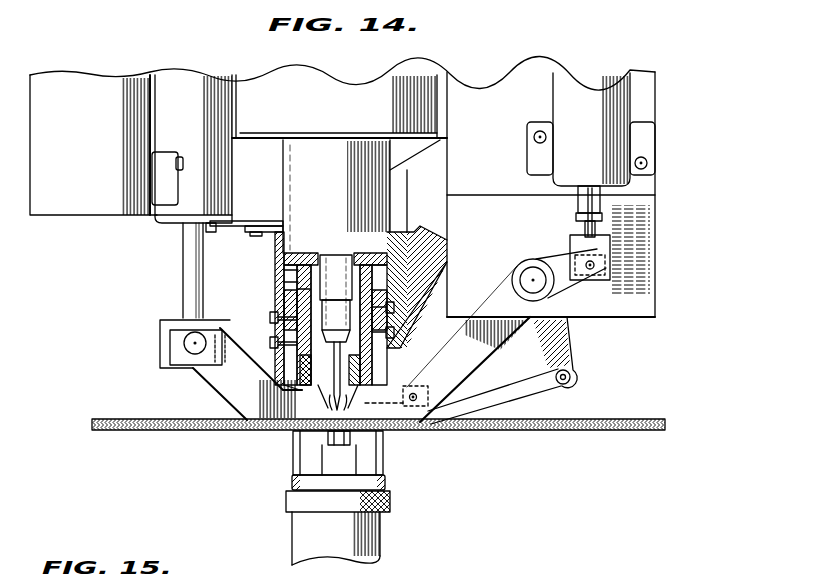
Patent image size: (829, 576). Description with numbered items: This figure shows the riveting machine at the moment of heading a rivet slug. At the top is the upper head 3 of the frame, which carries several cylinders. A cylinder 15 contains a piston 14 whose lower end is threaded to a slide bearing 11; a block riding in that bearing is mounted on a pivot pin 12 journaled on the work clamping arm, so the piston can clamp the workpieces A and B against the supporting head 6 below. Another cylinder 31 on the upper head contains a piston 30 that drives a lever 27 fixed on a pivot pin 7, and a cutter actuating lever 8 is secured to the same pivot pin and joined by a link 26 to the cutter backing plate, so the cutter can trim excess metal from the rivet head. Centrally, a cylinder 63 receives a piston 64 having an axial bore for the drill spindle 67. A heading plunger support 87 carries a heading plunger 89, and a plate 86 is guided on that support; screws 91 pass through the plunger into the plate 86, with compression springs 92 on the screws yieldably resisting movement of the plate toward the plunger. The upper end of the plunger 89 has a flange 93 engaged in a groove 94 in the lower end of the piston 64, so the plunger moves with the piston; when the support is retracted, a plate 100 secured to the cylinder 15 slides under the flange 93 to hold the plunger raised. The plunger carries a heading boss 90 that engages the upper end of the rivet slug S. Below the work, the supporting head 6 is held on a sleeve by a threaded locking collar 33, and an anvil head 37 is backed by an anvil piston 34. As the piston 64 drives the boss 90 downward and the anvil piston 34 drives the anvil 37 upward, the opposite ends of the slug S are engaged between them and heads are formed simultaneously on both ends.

The upper head 3 is at (657, 107).
The cylinder 15 is at (193, 117).
The cylinder 63 is at (336, 118).
The cylinder 31 is at (587, 120).
The piston 30 is at (580, 205).
The pivot pin 7 is at (532, 278).
The lever 27 is at (568, 262).
The cutter actuating lever 8 is at (571, 352).
The link 26 is at (535, 393).
The piston 14 is at (190, 240).
The plate 100 is at (246, 219).
The piston 64 is at (340, 200).
The heading plunger support 87 is at (277, 232).
The plate 86 is at (386, 375).
The drill spindle 67 is at (336, 254).
The groove 94 is at (292, 268).
The flange 93 is at (293, 280).
The heading plunger 89 is at (297, 289).
The screws 91 is at (276, 320).
The compression springs 92 is at (300, 365).
The slide bearing 11 is at (165, 322).
The pivot pin 12 is at (190, 343).
The workpiece A is at (97, 419).
The workpiece B is at (97, 431).
The supporting head 6 is at (294, 470).
The heading boss 90 is at (300, 436).
The rivet slug S is at (338, 462).
The anvil head 37 is at (388, 479).
The threaded locking collar 33 is at (392, 499).
The anvil piston 34 is at (382, 550).